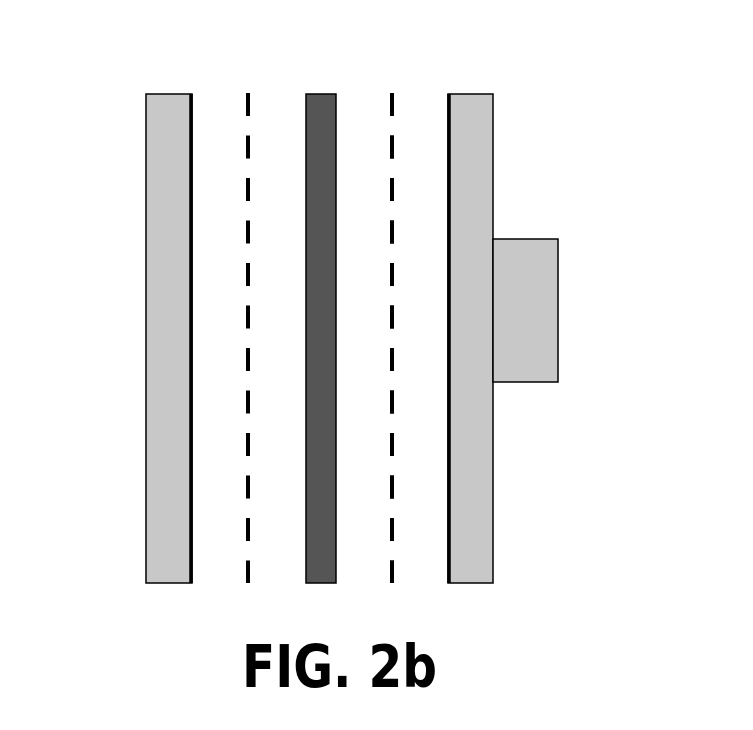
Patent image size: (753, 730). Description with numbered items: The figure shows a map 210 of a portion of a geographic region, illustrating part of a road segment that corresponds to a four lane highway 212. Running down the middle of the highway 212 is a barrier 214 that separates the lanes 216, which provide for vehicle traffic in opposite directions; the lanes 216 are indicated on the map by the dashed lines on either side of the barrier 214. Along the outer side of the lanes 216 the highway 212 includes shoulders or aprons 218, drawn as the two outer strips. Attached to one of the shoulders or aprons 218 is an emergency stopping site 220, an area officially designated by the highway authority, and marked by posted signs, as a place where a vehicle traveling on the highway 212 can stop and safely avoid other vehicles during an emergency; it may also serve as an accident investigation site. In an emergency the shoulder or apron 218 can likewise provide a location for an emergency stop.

The map 210 is at (656, 232).
The four lane highway 212 is at (220, 597).
The barrier 214 is at (315, 94).
The lanes 216 is at (418, 132).
The shoulders or aprons 218 is at (173, 94).
The emergency stopping site 220 is at (558, 310).